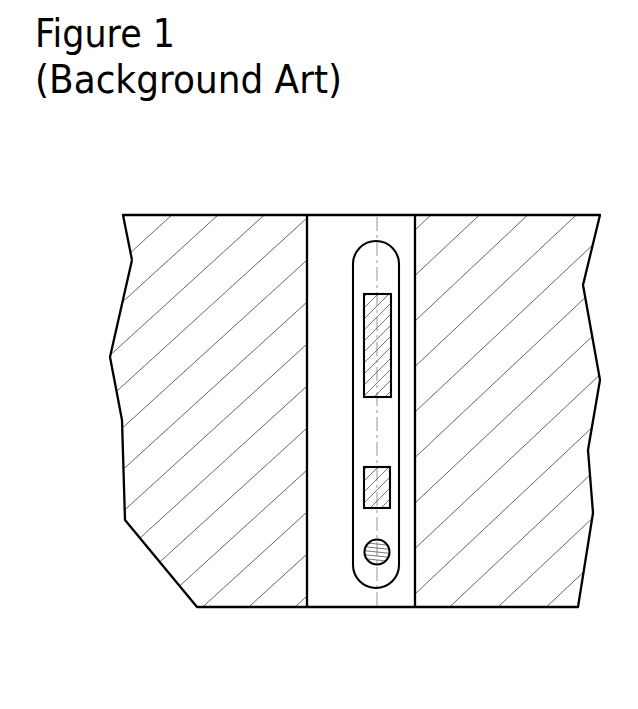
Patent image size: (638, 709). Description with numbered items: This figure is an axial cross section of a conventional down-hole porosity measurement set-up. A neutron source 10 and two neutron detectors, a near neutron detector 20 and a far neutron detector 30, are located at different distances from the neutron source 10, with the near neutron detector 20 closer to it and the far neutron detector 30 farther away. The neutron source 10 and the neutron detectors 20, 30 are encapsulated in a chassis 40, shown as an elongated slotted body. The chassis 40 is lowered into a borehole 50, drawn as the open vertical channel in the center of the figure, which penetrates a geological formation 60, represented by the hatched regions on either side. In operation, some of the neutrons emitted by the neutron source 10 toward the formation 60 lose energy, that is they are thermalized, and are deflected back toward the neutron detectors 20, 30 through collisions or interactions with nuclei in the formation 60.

The neutron source 10 is at (381, 564).
The near neutron detector 20 is at (386, 528).
The far neutron detector 30 is at (384, 282).
The chassis 40 is at (362, 243).
The borehole 50 is at (329, 565).
The geological formation 60 is at (157, 347).